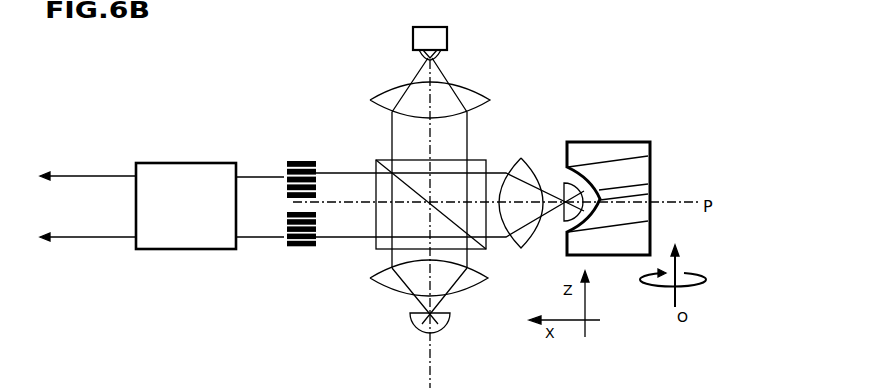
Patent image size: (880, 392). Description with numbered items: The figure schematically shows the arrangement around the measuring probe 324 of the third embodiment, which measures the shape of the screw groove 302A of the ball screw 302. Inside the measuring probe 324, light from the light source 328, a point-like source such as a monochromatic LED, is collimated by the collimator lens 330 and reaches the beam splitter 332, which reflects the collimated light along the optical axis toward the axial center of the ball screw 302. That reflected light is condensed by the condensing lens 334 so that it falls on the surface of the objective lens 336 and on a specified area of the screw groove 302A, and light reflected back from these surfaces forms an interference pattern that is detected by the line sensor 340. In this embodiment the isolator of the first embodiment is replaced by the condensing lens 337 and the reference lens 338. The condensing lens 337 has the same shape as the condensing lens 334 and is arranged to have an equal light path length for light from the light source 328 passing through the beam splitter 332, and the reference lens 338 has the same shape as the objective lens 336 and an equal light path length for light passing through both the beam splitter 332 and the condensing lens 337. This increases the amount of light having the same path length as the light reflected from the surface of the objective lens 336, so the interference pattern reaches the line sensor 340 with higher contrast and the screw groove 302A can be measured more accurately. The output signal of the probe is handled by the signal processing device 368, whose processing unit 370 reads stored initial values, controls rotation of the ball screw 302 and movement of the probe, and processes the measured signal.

The measuring probe 324 is at (333, 57).
The light source 328 is at (447, 40).
The collimator lens 330 is at (467, 99).
The beam splitter 332 is at (468, 170).
The condensing lens 334 is at (517, 161).
The objective lens 336 is at (564, 218).
The condensing lens 337 is at (467, 283).
The reference lens 338 is at (438, 321).
The line sensor 340 is at (291, 139).
The signal processing device 368 is at (151, 136).
The processing unit 370 is at (173, 192).
The ball screw 302 is at (620, 154).
The screw groove 302A is at (623, 185).